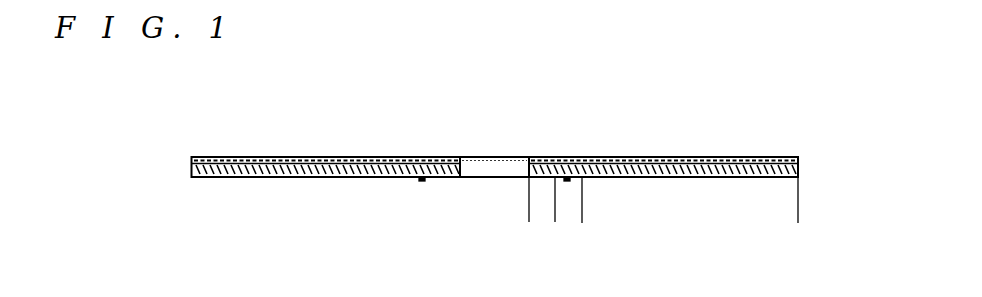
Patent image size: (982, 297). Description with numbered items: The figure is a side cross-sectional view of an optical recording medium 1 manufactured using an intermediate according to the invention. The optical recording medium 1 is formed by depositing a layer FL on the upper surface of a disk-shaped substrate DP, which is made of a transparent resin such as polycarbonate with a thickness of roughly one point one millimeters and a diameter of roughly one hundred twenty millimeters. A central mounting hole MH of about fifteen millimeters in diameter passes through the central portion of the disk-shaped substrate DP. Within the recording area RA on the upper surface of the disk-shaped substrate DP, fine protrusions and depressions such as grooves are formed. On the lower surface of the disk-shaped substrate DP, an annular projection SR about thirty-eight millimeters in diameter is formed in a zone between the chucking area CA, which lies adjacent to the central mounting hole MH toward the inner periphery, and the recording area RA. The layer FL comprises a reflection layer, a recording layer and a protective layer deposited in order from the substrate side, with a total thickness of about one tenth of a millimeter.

The optical recording medium 1 is at (502, 116).
The layer FL is at (713, 157).
The disk-shaped substrate DP is at (798, 171).
The central mounting hole MH is at (473, 172).
The annular projection SR is at (421, 183).
The chucking area CA is at (555, 213).
The recording area RA is at (798, 213).